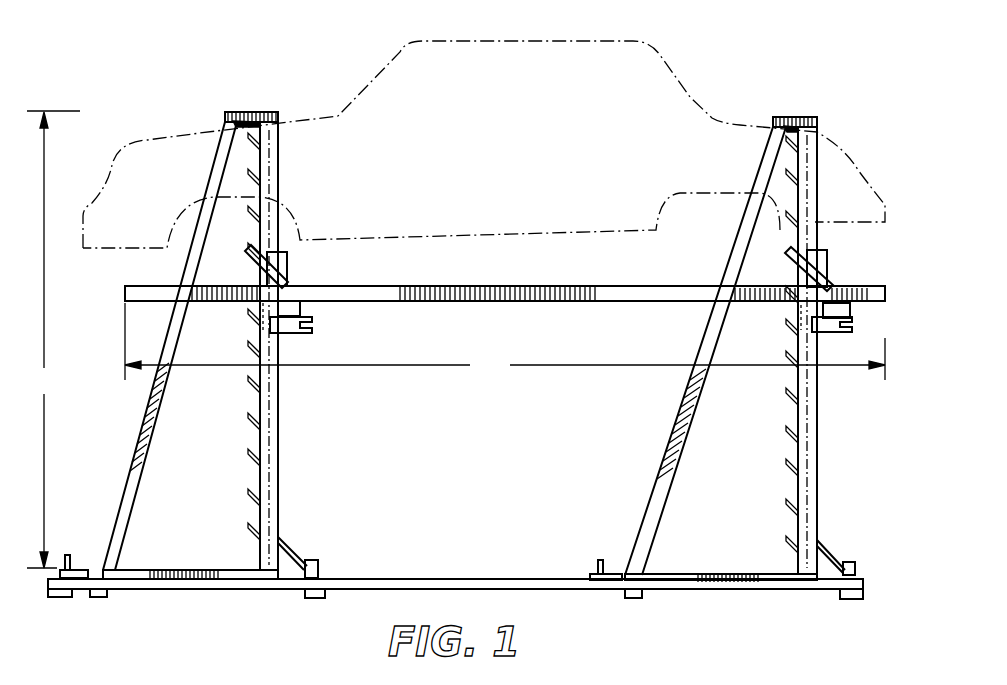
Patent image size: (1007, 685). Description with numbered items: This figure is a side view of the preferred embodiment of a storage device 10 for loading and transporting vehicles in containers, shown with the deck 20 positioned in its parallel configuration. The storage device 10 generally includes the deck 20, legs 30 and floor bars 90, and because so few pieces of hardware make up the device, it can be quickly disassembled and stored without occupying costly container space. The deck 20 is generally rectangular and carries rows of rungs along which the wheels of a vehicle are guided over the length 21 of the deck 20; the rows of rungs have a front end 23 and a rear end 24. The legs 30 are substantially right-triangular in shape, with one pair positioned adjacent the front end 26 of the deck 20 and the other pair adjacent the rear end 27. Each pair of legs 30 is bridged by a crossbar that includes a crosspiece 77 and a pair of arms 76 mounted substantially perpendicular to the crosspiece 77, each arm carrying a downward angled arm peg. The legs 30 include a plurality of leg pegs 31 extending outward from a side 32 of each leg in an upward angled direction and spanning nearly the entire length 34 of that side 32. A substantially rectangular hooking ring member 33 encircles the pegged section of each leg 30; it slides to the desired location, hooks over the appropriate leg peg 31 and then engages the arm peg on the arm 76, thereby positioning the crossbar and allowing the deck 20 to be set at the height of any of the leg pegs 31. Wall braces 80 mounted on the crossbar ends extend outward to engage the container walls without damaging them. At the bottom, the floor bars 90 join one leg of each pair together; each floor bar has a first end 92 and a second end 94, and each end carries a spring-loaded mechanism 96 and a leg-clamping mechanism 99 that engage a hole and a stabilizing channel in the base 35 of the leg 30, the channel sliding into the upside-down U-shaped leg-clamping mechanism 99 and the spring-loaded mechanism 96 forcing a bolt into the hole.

The storage device 10 is at (112, 329).
The deck 20 is at (346, 285).
The length of the deck 21 is at (505, 341).
The front end of the rows of rungs 23 is at (150, 286).
The rear end of the rows of rungs 24 is at (886, 300).
The front end of the deck 26 is at (125, 298).
The rear end of the deck 27 is at (888, 287).
The legs 30 is at (279, 443).
The leg pegs 31 is at (252, 146).
The side of the leg 32 is at (256, 214).
The hooking ring member 33 is at (250, 256).
The length of the leg 34 is at (53, 339).
The base of the leg 35 is at (180, 570).
The arms 76 is at (265, 318).
The crosspiece 77 is at (300, 309).
The wall braces 80 is at (302, 334).
The floor bars 90 is at (490, 590).
The first end of the floor bar 92 is at (198, 590).
The second end of the floor bar 94 is at (740, 590).
The spring-loaded mechanism 96 is at (84, 530).
The leg-clamping mechanism 99 is at (318, 562).